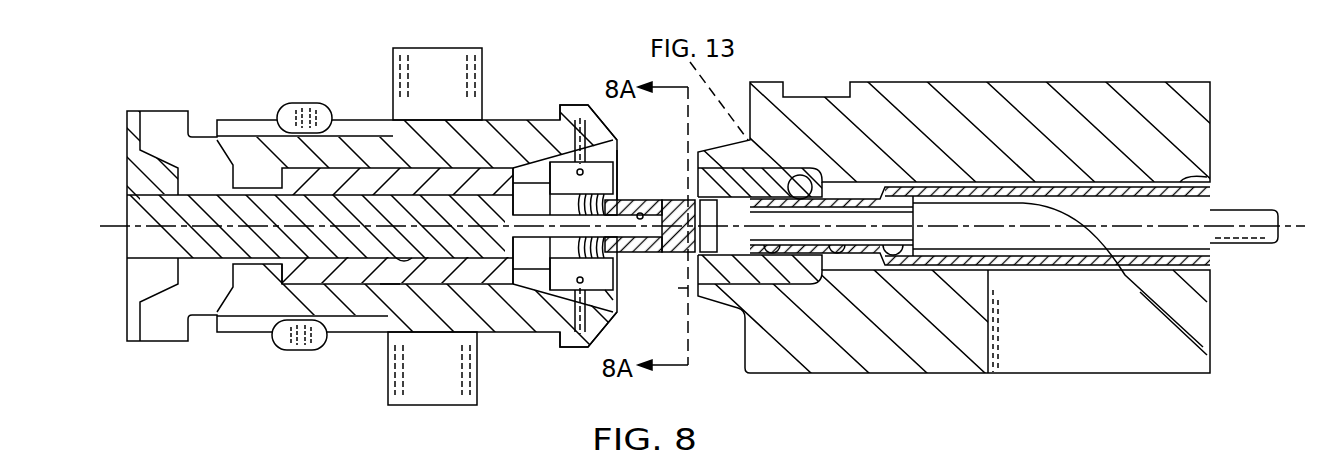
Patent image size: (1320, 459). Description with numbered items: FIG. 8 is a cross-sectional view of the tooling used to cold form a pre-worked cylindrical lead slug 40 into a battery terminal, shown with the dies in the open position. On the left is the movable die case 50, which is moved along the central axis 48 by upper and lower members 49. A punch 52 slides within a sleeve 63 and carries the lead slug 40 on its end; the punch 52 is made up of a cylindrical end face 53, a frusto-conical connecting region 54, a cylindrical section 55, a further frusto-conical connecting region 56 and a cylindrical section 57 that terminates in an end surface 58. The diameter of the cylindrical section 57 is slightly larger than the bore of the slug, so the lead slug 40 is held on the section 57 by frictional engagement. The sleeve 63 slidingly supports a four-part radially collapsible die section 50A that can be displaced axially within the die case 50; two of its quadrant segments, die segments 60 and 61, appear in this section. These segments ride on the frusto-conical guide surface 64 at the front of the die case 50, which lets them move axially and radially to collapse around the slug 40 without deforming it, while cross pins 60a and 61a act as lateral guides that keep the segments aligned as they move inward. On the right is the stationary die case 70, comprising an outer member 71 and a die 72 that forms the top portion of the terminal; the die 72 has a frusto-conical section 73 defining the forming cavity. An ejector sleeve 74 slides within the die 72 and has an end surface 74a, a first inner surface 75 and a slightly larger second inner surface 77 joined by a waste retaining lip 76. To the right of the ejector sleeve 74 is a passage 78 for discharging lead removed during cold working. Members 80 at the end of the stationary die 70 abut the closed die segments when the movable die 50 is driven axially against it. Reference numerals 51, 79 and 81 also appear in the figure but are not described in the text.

The pre-worked cylindrical lead slug 40 is at (643, 241).
The central axis 48 is at (117, 227).
The upper and lower members 49 is at (289, 107).
The movable die case 50 is at (510, 57).
The four-part radially collapsible die section 50A is at (624, 161).
The plug body 51 is at (490, 118).
The punch 52 is at (214, 203).
The cylindrical end face 53 is at (387, 300).
The frusto-conical connecting region 54 is at (405, 260).
The cylindrical section 55 is at (473, 217).
The further frusto-conical connecting region 56 is at (515, 262).
The cylindrical section 57 is at (605, 255).
The end surface 58 is at (660, 202).
The die segment 60 is at (610, 177).
The cross pin 60a is at (582, 170).
The die segment 61 is at (608, 278).
The cross pin 61a is at (556, 338).
The sleeve 63 is at (282, 293).
The frusto-conical guide surface 64 is at (527, 160).
The stationary die case 70 is at (1012, 72).
The outer member 71 is at (1090, 88).
The die 72 is at (808, 175).
The frusto-conical section 73 is at (716, 250).
The ejector sleeve 74 is at (850, 265).
The end surface 74a is at (728, 282).
The first inner surface 75 is at (777, 268).
The waste retaining lip 76 is at (820, 262).
The second inner surface 77 is at (905, 235).
The passage 78 is at (1053, 326).
The seal 79 is at (1208, 176).
The members 80 is at (686, 288).
The latch surface 81 is at (612, 303).